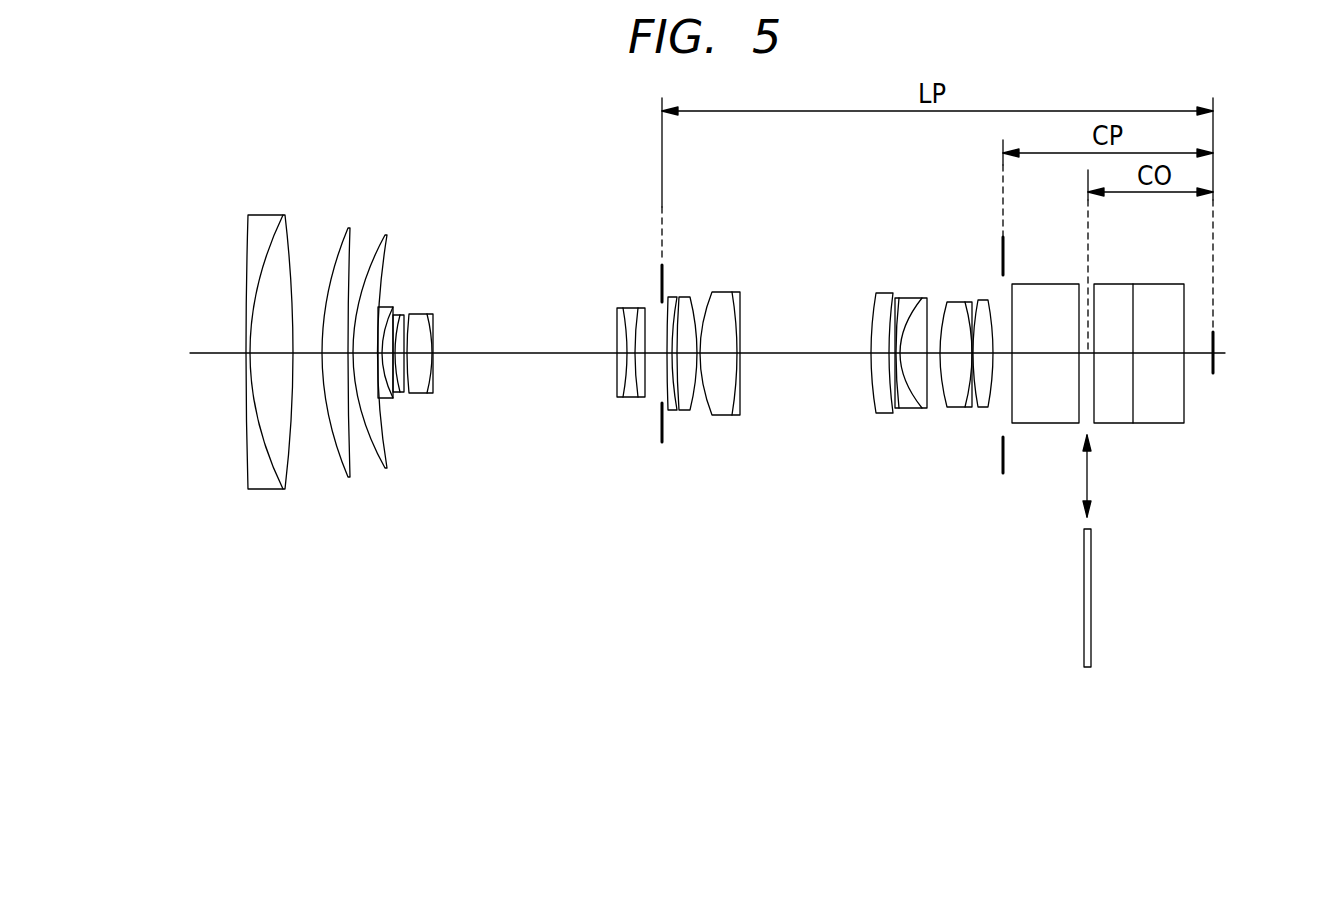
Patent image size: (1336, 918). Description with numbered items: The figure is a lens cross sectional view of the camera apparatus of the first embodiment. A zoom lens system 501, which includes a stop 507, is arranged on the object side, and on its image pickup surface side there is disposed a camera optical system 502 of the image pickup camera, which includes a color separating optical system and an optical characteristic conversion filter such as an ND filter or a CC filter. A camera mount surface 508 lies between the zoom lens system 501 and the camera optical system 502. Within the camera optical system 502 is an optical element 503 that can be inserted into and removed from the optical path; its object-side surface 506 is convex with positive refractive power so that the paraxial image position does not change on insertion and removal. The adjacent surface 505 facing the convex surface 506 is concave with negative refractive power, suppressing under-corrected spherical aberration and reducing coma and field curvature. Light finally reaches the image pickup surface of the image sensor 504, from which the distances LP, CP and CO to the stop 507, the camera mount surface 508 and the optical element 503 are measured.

The zoom lens system 501 is at (1000, 500).
The camera optical system 502 is at (1053, 520).
The optical element 503 is at (1046, 568).
The image sensor 504 is at (1215, 365).
The surface 505 is at (1078, 382).
The surface 506 is at (1083, 600).
The stop 507 is at (661, 428).
The camera mount surface 508 is at (1002, 468).